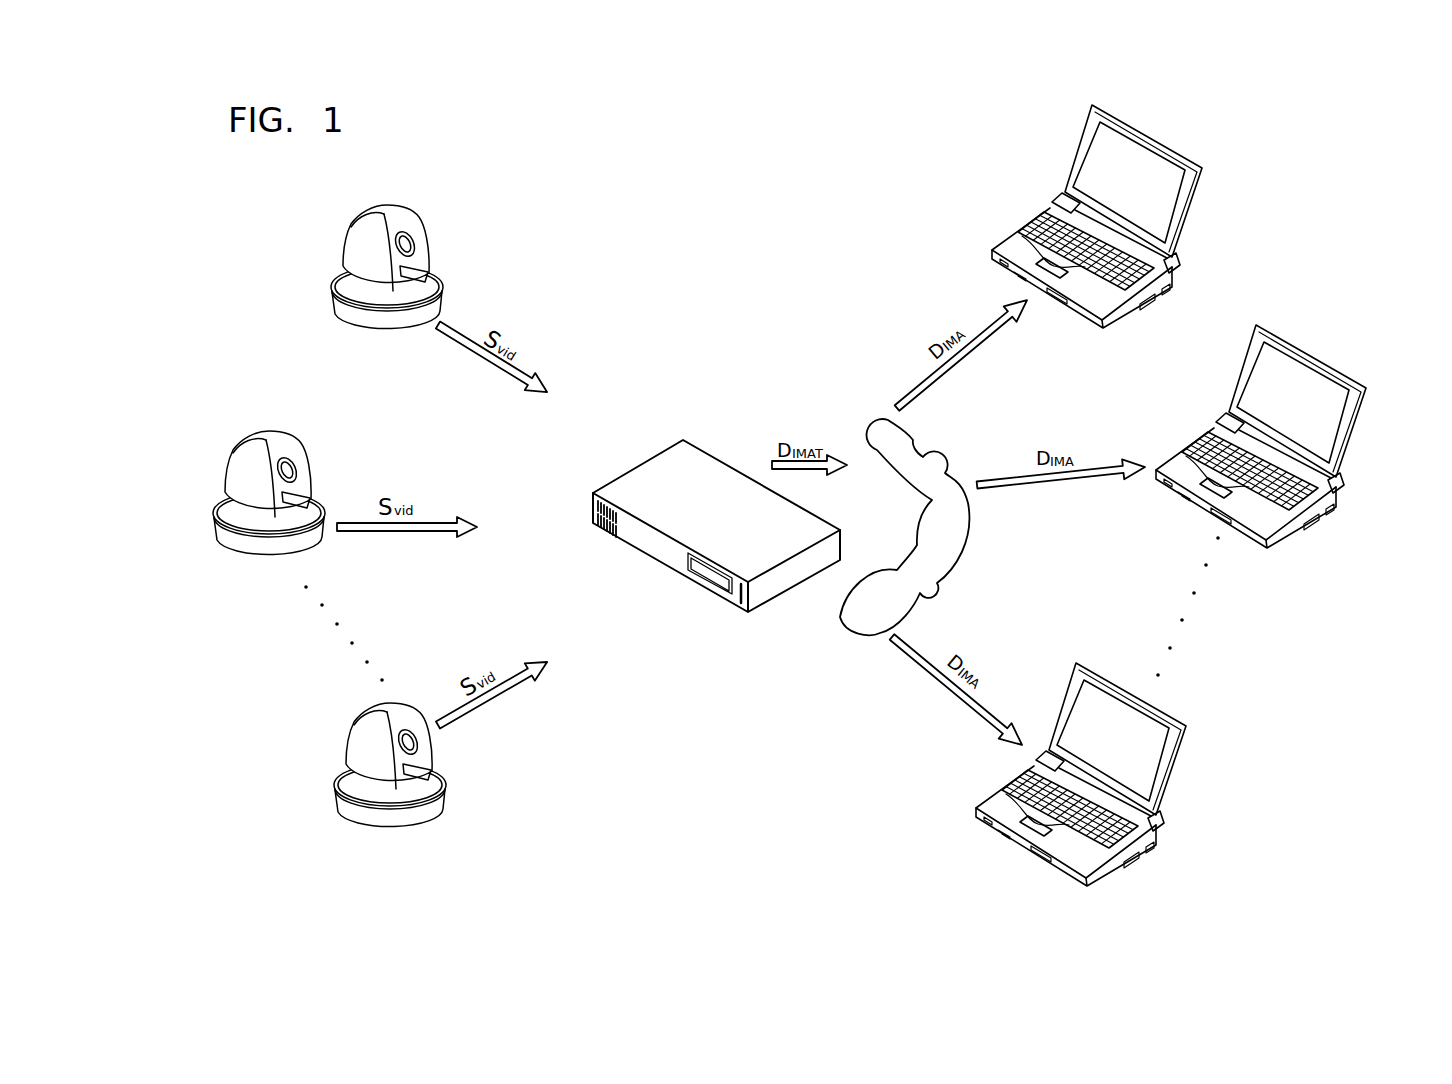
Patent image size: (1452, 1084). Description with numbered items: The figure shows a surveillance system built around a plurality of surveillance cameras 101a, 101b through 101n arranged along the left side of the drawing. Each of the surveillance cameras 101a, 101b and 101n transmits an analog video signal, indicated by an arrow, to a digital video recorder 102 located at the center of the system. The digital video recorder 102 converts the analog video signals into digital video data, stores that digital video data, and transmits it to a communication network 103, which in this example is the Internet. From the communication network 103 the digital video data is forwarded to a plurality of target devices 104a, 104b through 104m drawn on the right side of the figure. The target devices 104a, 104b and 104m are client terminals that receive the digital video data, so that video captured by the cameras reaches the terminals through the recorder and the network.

The surveillance camera 101a is at (360, 323).
The surveillance camera 101b is at (242, 547).
The surveillance camera 101n is at (363, 818).
The digital video recorder 102 is at (715, 443).
The communication network 103 is at (868, 415).
The target device 104a is at (1032, 227).
The target device 104b is at (1190, 445).
The target device 104m is at (983, 828).